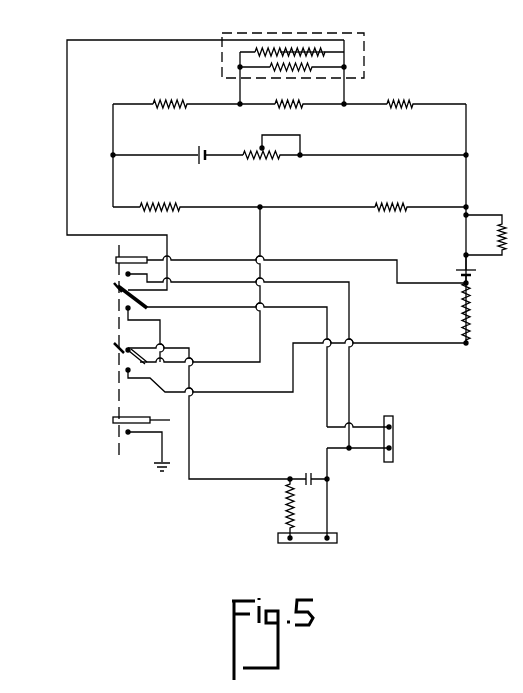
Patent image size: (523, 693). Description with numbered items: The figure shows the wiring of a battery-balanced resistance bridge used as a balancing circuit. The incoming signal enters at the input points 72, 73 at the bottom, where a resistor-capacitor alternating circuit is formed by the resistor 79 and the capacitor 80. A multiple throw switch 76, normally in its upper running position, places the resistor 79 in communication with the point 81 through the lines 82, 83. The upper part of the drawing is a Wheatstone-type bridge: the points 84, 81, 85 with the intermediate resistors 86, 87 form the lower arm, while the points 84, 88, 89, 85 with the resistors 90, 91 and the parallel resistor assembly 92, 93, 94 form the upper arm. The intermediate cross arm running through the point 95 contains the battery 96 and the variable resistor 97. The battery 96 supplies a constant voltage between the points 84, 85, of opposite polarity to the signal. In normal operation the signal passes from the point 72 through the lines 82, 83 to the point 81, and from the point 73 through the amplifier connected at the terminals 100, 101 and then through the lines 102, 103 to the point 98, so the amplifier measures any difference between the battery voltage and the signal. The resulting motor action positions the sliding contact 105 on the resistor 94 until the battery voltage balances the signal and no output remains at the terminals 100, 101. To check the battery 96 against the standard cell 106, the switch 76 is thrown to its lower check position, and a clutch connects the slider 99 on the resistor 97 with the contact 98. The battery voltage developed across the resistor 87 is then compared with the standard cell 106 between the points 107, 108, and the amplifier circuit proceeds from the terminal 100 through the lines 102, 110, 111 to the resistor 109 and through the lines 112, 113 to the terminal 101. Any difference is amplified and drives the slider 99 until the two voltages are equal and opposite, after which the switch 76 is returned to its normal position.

The input point 72 is at (290, 543).
The input point 73 is at (327, 543).
The multiple throw switch 76 is at (108, 341).
The resistor 79 is at (286, 504).
The capacitor 80 is at (308, 473).
The point 81 is at (261, 209).
The line 82 is at (189, 438).
The line 83 is at (260, 333).
The point 84 is at (113, 155).
The point 85 is at (466, 155).
The resistor 86 is at (163, 205).
The resistor 87 is at (395, 205).
The point 88 is at (240, 104).
The point 89 is at (344, 104).
The resistor 90 is at (170, 102).
The resistor 91 is at (405, 102).
The resistor 92 is at (288, 108).
The resistor 93 is at (298, 70).
The resistor 94 is at (305, 52).
The point 95 is at (300, 152).
The battery 96 is at (205, 158).
The variable resistor 97 is at (266, 158).
The point 98 is at (291, 50).
The slider 99 is at (260, 146).
The terminal 100 is at (393, 427).
The terminal 101 is at (393, 448).
The line 102 is at (327, 388).
The line 103 is at (67, 158).
The sliding contact 105 is at (300, 60).
The standard cell 106 is at (455, 272).
The point 107 is at (466, 207).
The point 108 is at (466, 343).
The resistor 109 is at (470, 312).
The line 110 is at (160, 336).
The line 111 is at (240, 392).
The line 112 is at (352, 256).
The line 113 is at (349, 360).